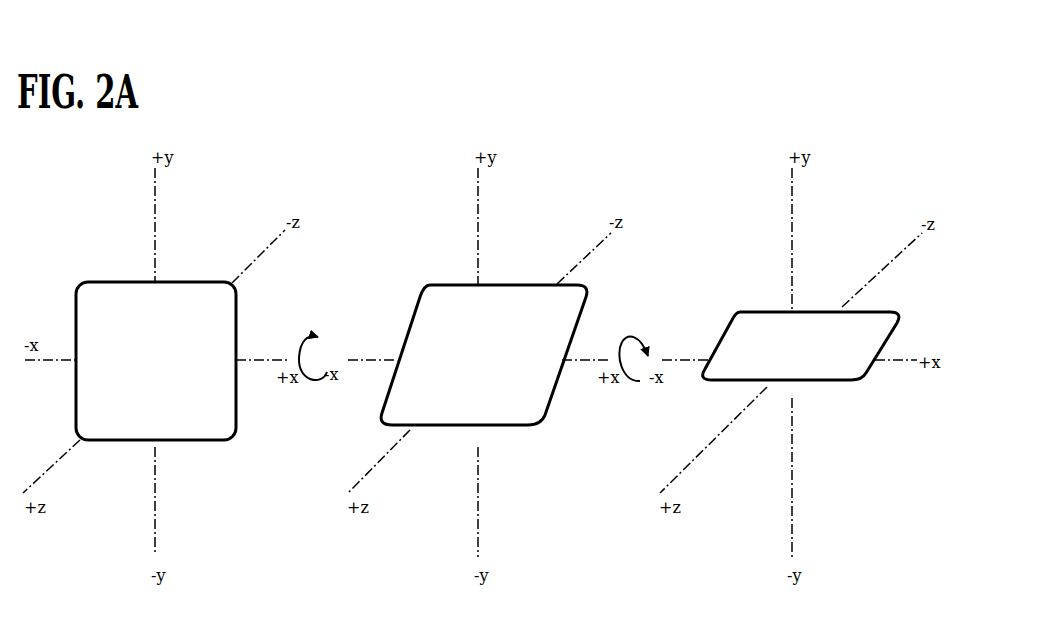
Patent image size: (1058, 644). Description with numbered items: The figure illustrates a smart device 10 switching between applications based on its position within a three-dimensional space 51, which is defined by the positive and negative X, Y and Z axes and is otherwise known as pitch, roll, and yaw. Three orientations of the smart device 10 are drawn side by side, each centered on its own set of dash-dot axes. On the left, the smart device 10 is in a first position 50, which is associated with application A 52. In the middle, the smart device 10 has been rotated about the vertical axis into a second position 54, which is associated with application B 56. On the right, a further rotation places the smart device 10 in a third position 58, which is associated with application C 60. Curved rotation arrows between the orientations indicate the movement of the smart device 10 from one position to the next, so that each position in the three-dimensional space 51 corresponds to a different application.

The smart device 10 is at (72, 284).
The three-dimensional space 51 is at (157, 230).
The application A 52 is at (155, 361).
The first position 50 is at (198, 464).
The application B 56 is at (479, 360).
The second position 54 is at (508, 435).
The application C 60 is at (799, 348).
The third position 58 is at (822, 402).